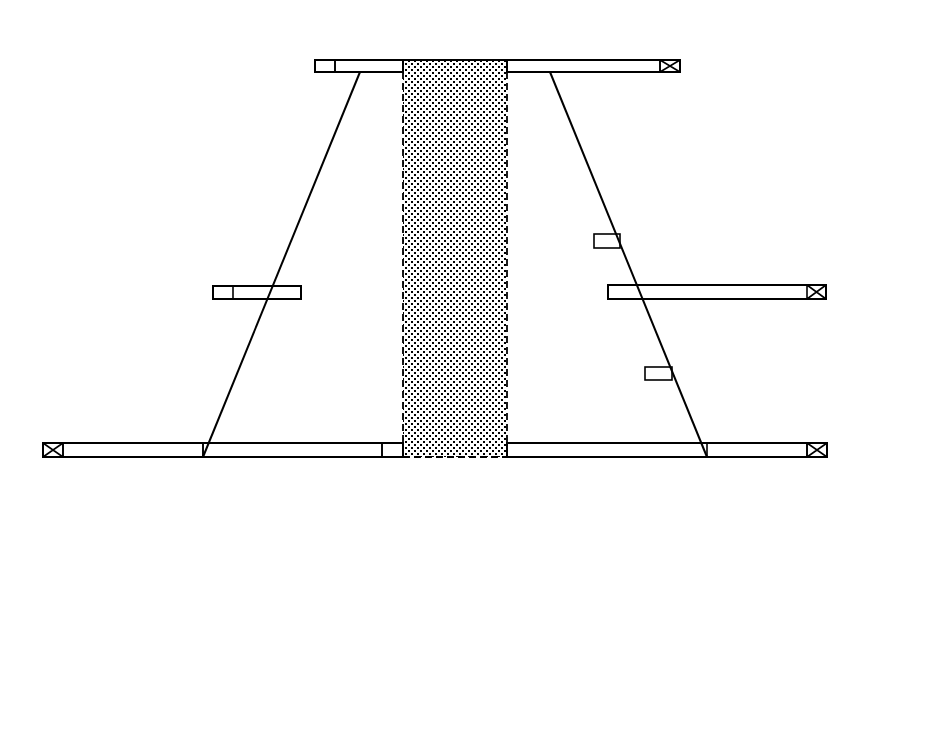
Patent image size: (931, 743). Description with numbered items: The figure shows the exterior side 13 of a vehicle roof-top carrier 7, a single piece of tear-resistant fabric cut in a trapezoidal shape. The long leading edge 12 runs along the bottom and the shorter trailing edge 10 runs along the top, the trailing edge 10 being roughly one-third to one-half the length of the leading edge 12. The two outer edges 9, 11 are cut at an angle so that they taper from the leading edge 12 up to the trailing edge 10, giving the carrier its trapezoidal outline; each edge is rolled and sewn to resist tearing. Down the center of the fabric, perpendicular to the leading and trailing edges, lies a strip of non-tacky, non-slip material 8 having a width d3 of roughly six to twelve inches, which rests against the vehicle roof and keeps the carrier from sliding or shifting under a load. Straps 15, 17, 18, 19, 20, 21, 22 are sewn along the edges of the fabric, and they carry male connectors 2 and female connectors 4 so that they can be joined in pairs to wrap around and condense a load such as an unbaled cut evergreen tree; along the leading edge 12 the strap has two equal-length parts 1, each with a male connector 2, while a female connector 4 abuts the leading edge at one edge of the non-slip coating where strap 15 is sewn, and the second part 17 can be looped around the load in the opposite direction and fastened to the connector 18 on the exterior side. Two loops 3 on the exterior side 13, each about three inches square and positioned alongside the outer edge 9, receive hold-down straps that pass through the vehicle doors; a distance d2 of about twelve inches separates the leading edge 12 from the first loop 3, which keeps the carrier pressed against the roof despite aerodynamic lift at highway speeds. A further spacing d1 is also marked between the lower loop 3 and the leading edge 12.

The leading edge strap part 1 is at (188, 443).
The male connector 2 is at (681, 65).
The loop 3 is at (622, 241).
The female connector 4 is at (315, 66).
The vehicle roof-top carrier 7 is at (196, 118).
The non-slip material strip 8 is at (420, 80).
The outer edge 9 is at (602, 188).
The trailing edge 10 is at (487, 59).
The outer edge 11 is at (304, 203).
The leading edge 12 is at (462, 458).
The exterior side 13 is at (560, 162).
The strap 15 is at (126, 443).
The strap second part 17 is at (750, 443).
The connector 18 is at (385, 458).
The strap 19 is at (708, 285).
The strap 20 is at (247, 286).
The strap 21 is at (650, 60).
The strap 22 is at (337, 60).
The distance d1 is at (622, 375).
The distance from leading edge to first loop d2 is at (572, 245).
The width of non-slip coating d3 is at (407, 22).